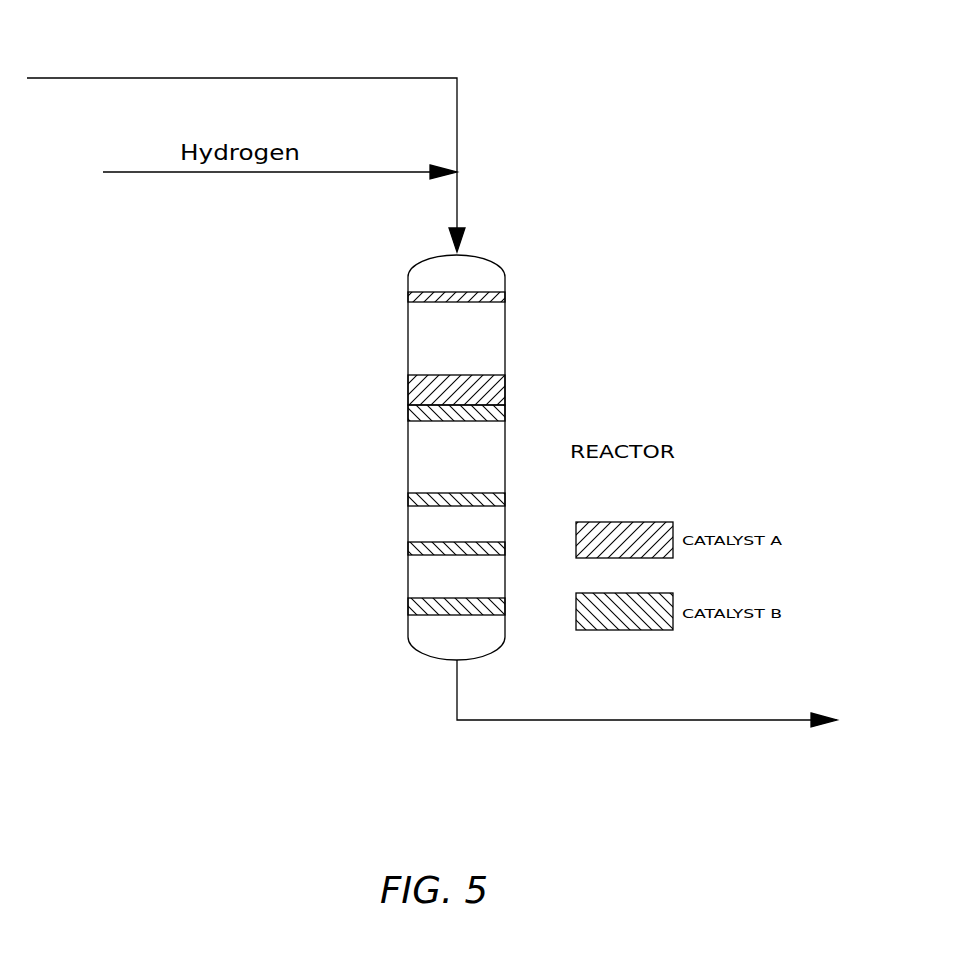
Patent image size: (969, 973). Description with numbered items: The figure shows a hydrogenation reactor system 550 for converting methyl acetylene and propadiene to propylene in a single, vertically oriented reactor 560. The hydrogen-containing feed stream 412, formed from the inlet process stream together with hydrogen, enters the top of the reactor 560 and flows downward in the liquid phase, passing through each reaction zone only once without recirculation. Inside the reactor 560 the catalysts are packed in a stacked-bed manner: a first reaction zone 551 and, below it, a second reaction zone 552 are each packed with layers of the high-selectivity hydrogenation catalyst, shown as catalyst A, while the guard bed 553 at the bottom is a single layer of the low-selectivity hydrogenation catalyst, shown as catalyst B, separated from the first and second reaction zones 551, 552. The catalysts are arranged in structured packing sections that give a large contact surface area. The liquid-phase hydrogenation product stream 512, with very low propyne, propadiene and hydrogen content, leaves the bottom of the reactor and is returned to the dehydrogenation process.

The hydrogen-containing feed stream 412 is at (272, 149).
The hydrogenation reactor system 550 is at (332, 457).
The single reactor 560 is at (409, 283).
The first reaction zone 551 is at (420, 356).
The second reaction zone 552 is at (421, 470).
The guard bed 553 is at (418, 590).
The hydrogenation product stream 512 is at (646, 723).